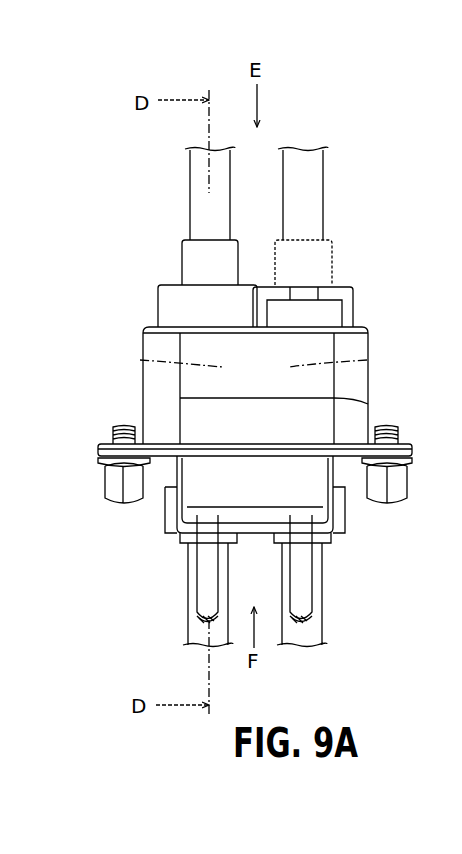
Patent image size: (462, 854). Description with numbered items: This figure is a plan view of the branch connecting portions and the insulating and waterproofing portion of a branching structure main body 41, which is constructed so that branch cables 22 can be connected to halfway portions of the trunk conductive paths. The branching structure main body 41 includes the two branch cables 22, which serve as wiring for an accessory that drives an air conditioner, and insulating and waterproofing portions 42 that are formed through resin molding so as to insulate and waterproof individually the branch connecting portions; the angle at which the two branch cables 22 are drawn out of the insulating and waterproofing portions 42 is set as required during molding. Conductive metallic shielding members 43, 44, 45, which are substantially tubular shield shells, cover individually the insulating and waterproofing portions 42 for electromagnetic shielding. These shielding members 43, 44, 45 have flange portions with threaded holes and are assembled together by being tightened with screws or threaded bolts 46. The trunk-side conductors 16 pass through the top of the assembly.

The tube 16 is at (190, 190).
The branch cable 22 is at (205, 587).
The branching structure main body 41 is at (123, 272).
The insulating and waterproofing portion 42 is at (140, 360).
The shielding member 43 is at (345, 517).
The shielding member 44 is at (193, 420).
The shielding member 45 is at (160, 477).
The threaded bolt 46 is at (127, 495).